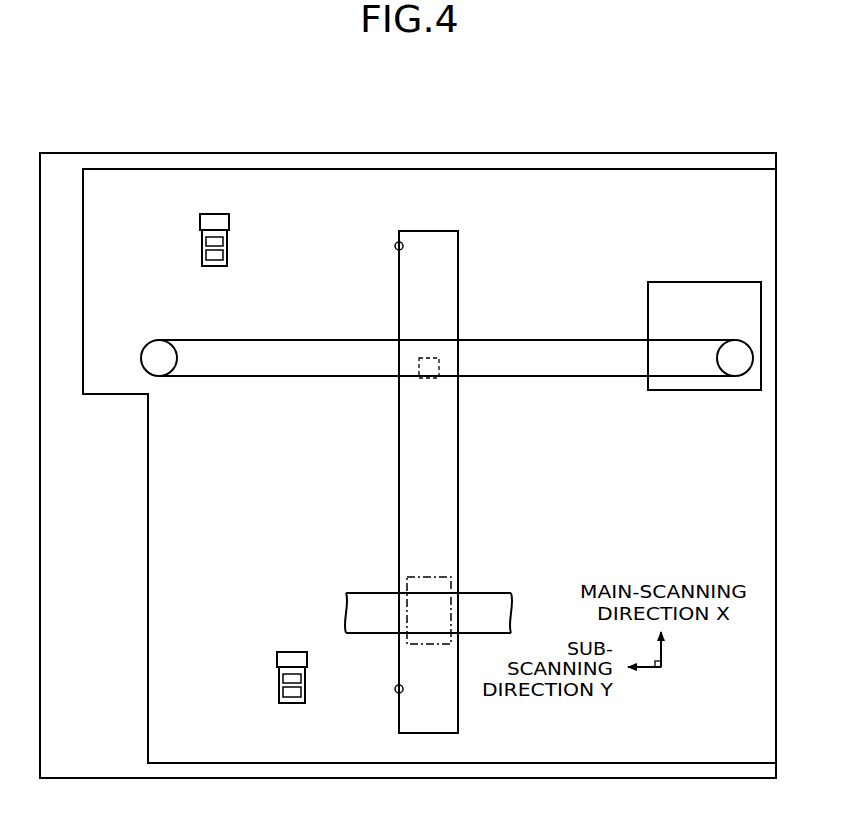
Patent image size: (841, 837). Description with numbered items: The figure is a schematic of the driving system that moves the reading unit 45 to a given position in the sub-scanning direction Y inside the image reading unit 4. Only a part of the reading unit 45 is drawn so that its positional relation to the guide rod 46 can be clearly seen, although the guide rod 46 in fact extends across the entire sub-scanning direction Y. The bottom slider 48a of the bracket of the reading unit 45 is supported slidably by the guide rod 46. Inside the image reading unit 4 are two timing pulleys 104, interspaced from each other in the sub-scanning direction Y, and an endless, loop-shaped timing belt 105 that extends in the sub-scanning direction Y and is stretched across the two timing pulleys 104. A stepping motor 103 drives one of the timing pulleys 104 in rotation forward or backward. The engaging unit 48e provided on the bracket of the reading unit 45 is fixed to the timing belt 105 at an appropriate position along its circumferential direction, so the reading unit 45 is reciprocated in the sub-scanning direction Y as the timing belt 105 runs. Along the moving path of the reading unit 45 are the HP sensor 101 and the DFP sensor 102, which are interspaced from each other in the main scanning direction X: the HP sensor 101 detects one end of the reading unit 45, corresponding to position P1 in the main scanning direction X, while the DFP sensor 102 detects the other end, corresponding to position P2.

The image reading unit 4 is at (612, 116).
The reading unit 45 is at (458, 483).
The guide rod 46 is at (512, 612).
The bottom slider 48a is at (452, 586).
The engaging unit 48e is at (439, 373).
The HP sensor 101 is at (283, 651).
The DFP sensor 102 is at (200, 220).
The stepping motor 103 is at (708, 282).
The timing pulleys 104 is at (158, 362).
The timing belt 105 is at (560, 377).
The position P1 is at (395, 687).
The position P2 is at (395, 244).